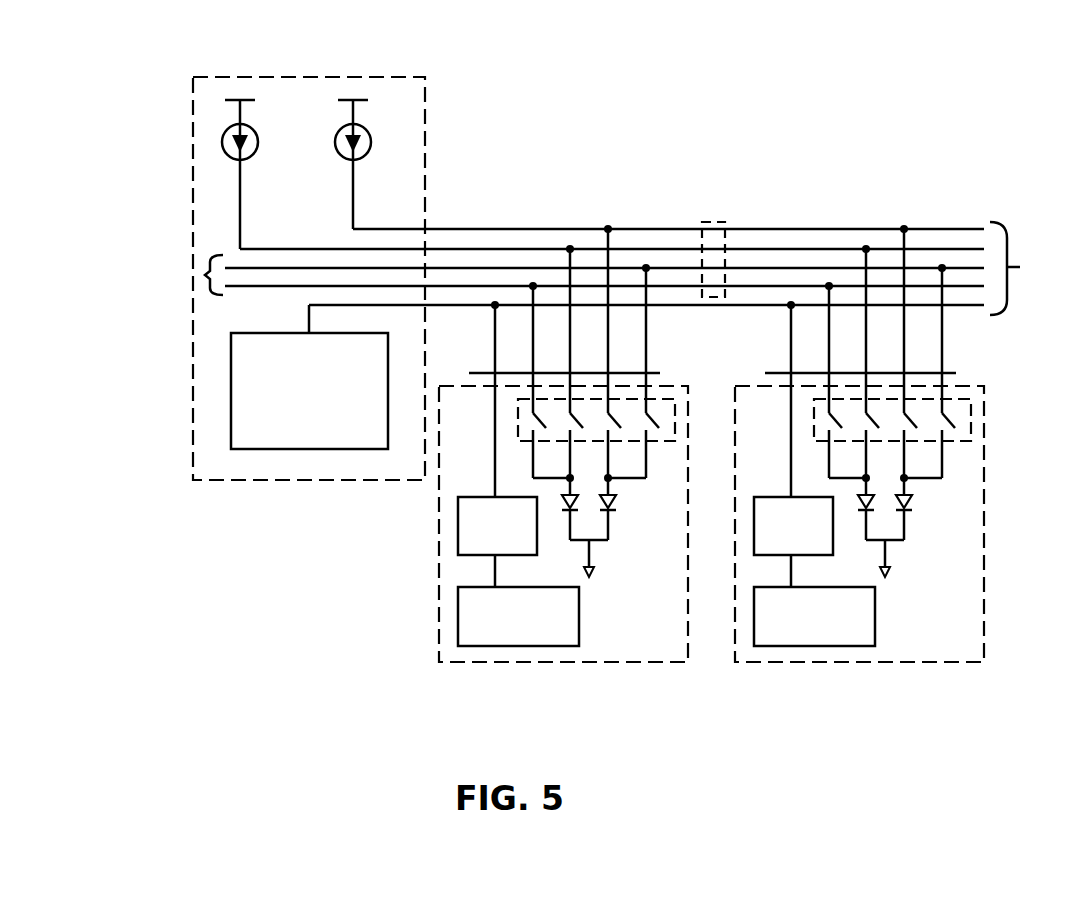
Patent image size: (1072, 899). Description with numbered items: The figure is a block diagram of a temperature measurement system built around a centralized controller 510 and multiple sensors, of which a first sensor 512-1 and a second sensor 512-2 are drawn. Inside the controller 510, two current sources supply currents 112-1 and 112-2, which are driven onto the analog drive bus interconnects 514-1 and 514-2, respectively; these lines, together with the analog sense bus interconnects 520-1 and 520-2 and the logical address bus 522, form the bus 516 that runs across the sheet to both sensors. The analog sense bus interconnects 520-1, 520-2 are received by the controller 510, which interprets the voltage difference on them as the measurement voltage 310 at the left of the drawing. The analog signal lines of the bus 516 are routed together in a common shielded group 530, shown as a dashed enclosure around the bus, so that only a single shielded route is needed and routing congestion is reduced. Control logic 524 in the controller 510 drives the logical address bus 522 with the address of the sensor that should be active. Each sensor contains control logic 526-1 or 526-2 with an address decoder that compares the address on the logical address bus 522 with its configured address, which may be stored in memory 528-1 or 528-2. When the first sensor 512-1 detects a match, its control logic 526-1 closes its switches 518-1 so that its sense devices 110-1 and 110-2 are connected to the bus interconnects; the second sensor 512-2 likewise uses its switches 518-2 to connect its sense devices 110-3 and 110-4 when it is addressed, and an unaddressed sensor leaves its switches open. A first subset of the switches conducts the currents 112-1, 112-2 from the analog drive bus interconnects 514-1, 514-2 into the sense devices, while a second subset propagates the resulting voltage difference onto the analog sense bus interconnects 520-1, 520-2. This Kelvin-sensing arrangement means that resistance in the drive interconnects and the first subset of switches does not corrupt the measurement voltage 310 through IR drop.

The controller 510 is at (307, 76).
The current 112-1 is at (223, 133).
The current 112-2 is at (366, 131).
The voltage 310 is at (208, 275).
The control logic 524 is at (309, 377).
The bus 516 is at (647, 197).
The analog drive bus interconnect 514-1 is at (577, 228).
The analog drive bus interconnect 514-2 is at (582, 248).
The analog sense bus interconnect 520-1 is at (443, 266).
The analog sense bus interconnect 520-2 is at (458, 285).
The logical address bus 522 is at (955, 305).
The common shielded group 530 is at (725, 222).
The sensor 512-1 is at (602, 482).
The sensor 512-2 is at (897, 482).
The switches 518-1 is at (658, 398).
The switches 518-2 is at (954, 398).
The control logic 526-1 is at (497, 526).
The control logic 526-2 is at (793, 526).
The memory 528-1 is at (518, 616).
The memory 528-2 is at (814, 616).
The sense device 110-1 is at (577, 507).
The sense device 110-2 is at (617, 503).
The sense device 110-3 is at (873, 507).
The sense device 110-4 is at (913, 503).